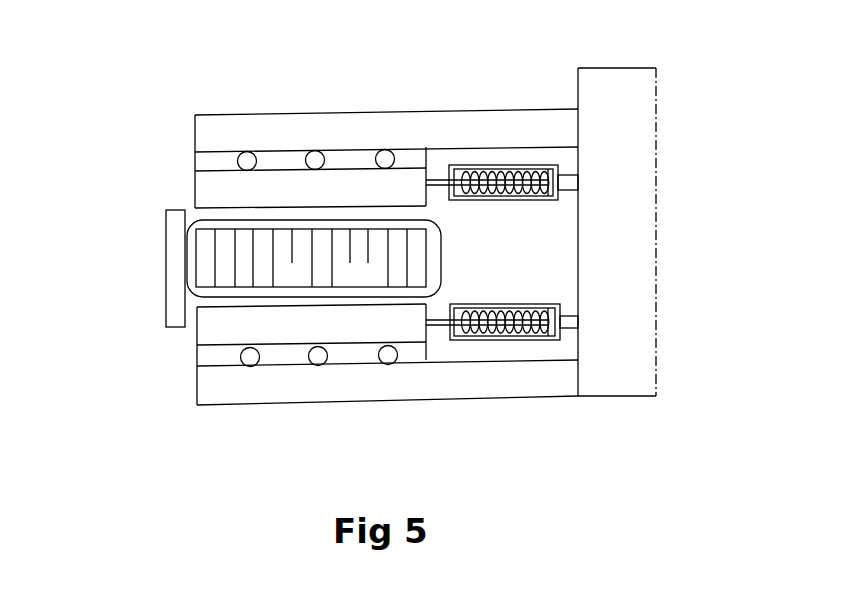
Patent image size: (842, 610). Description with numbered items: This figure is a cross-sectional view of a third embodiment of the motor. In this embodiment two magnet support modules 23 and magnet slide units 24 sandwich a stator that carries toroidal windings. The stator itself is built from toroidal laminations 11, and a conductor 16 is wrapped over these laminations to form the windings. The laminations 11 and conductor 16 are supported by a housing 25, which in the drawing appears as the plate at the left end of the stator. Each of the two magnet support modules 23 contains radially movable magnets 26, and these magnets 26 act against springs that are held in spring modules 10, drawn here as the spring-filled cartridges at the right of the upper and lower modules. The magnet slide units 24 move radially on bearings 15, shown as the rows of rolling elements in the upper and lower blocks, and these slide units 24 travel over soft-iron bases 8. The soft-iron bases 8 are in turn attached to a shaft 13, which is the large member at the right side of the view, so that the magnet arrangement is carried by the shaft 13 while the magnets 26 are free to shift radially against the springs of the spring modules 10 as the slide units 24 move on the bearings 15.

The soft-iron base 8 is at (357, 128).
The spring module 10 is at (535, 306).
The toroidal lamination 11 is at (240, 247).
The shaft 13 is at (640, 338).
The bearing 15 is at (243, 153).
The conductor 16 is at (223, 225).
The magnet support module 23 is at (403, 80).
The magnet slide unit 24 is at (172, 164).
The housing 25 is at (172, 312).
The radially movable magnet 26 is at (404, 187).